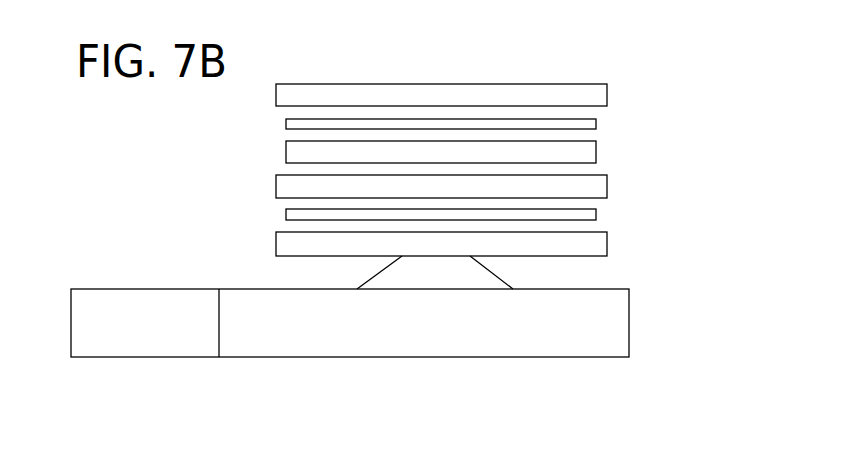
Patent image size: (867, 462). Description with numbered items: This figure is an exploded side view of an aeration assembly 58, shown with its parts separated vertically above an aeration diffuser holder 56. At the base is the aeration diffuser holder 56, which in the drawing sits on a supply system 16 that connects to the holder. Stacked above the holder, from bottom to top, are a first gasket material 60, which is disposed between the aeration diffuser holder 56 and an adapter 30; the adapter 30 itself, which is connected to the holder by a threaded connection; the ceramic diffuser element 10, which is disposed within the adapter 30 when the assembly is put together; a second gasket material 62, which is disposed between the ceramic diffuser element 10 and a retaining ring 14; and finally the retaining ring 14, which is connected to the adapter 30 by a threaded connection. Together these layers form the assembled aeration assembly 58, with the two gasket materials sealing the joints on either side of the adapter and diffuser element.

The retaining ring 14 is at (607, 90).
The second gasket material 62 is at (286, 121).
The ceramic diffuser element 10 is at (286, 154).
The adapter 30 is at (607, 182).
The first gasket material 60 is at (286, 211).
The supply system 16 is at (128, 289).
The aeration diffuser holder 56 is at (608, 383).
The aeration assembly 58 is at (663, 328).